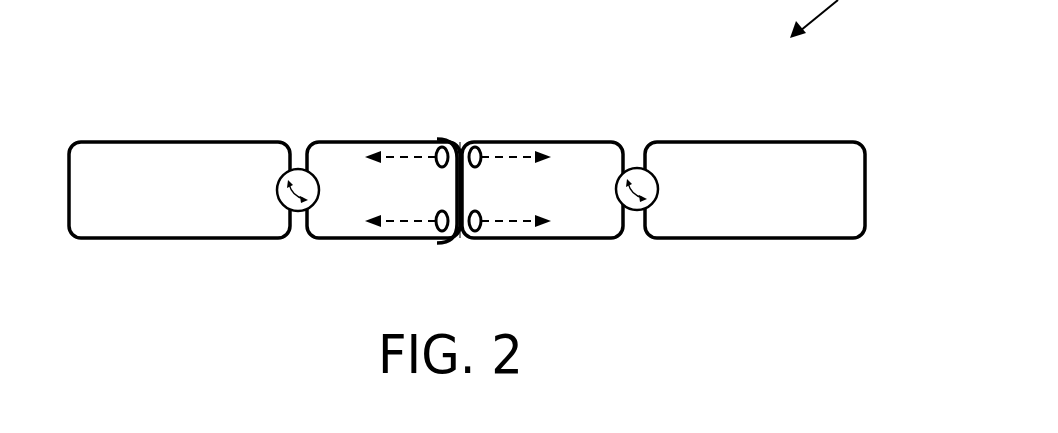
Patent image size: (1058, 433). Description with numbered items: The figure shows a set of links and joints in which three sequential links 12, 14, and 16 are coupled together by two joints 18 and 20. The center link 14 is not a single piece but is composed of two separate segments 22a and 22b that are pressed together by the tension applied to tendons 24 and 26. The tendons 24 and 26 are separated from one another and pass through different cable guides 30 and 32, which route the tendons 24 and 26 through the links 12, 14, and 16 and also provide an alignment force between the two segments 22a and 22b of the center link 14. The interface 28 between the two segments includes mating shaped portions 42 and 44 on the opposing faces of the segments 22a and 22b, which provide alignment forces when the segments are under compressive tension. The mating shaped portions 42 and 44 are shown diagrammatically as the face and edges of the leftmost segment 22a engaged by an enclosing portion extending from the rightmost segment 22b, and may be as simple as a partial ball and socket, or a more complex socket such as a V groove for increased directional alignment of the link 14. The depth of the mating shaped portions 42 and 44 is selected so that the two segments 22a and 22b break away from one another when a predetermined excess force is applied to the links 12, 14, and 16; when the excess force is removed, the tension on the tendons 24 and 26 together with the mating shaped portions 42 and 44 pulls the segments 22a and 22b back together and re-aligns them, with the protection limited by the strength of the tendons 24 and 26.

The link 12 is at (143, 178).
The center link 14 is at (368, 203).
The link 16 is at (687, 172).
The joint 18 is at (635, 211).
The joint 20 is at (298, 212).
The segment 22a is at (357, 141).
The segment 22b is at (571, 141).
The tendon 24 is at (507, 160).
The tendon 26 is at (505, 224).
The interface 28 is at (462, 143).
The cable guide 30 is at (483, 152).
The cable guide 32 is at (437, 164).
The mating shaped portion 42 is at (449, 137).
The mating shaped portion 44 is at (450, 150).